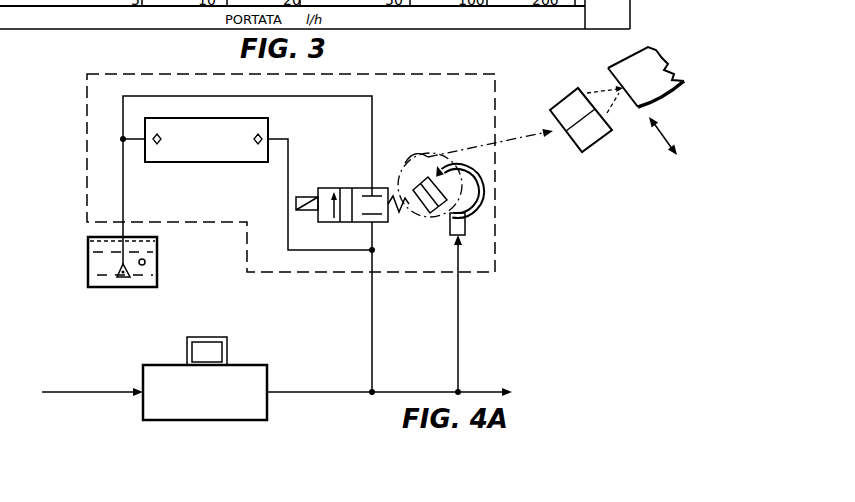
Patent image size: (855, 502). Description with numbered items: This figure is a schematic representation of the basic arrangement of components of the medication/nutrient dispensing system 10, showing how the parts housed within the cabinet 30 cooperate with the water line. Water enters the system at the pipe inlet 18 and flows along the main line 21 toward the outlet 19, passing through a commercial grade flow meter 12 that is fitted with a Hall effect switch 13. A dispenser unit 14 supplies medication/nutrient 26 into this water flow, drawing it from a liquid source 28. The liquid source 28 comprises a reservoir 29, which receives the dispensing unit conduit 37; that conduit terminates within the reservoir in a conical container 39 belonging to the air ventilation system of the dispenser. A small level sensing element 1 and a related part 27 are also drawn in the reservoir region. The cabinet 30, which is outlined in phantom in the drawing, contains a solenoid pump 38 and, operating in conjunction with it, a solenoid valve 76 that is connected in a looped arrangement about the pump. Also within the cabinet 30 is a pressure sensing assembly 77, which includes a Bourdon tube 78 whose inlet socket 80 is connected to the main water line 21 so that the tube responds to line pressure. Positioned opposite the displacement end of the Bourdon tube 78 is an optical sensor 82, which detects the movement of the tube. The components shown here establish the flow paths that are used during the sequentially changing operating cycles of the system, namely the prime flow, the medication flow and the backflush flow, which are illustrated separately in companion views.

The sensor element 1 is at (145, 262).
The system 10 is at (478, 360).
The flow meter 12 is at (219, 401).
The Hall effect switch 13 is at (207, 347).
The dispenser unit 14 is at (304, 157).
The pipe inlet 18 is at (75, 392).
The outlet 19 is at (474, 392).
The main line 21 is at (325, 392).
The medication/nutrient 26 is at (88, 272).
The level sensor 27 is at (158, 262).
The liquid source 28 is at (70, 257).
The reservoir 29 is at (117, 288).
The cabinet 30 is at (86, 152).
The dispensing unit conduit 37 is at (123, 209).
The solenoid pump 38 is at (214, 154).
The conical container 39 is at (127, 262).
The solenoid valve 76 is at (326, 190).
The pressure sensing assembly 77 is at (495, 193).
The Bourdon tube 78 is at (650, 57).
The inlet socket 80 is at (465, 232).
The optical sensor 82 is at (430, 220).